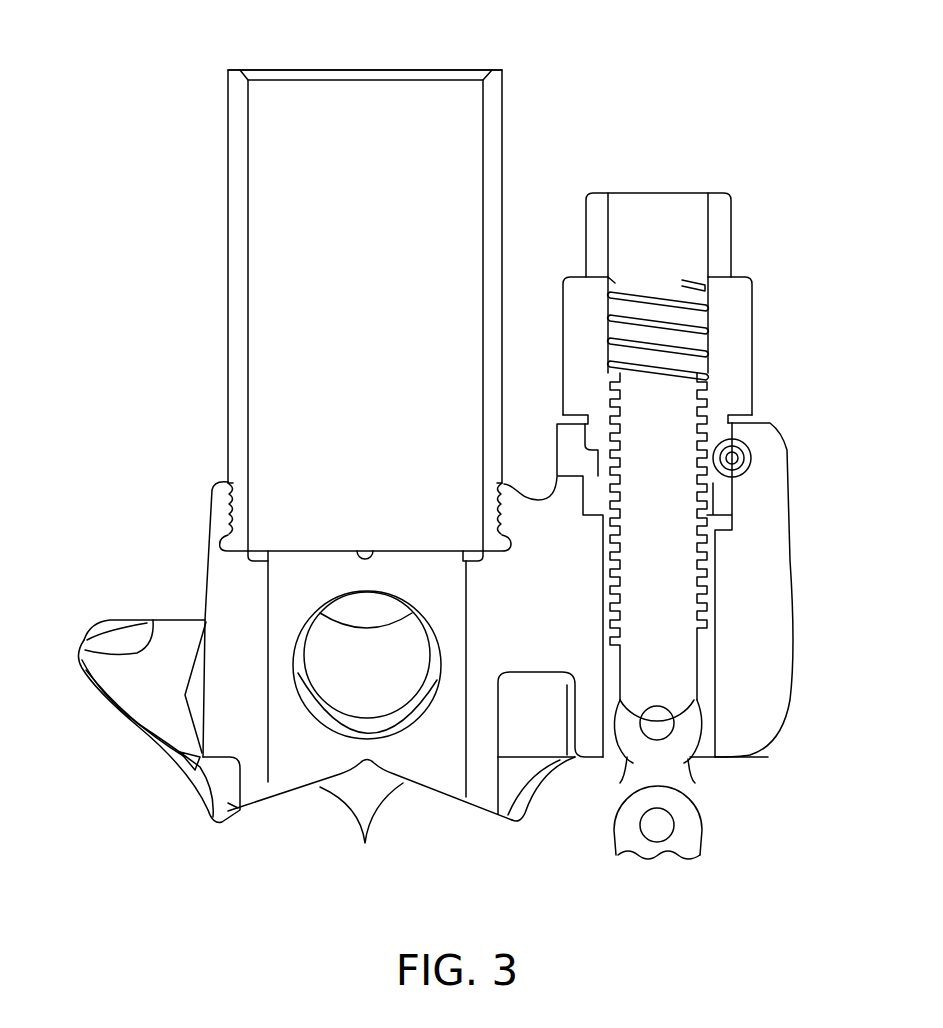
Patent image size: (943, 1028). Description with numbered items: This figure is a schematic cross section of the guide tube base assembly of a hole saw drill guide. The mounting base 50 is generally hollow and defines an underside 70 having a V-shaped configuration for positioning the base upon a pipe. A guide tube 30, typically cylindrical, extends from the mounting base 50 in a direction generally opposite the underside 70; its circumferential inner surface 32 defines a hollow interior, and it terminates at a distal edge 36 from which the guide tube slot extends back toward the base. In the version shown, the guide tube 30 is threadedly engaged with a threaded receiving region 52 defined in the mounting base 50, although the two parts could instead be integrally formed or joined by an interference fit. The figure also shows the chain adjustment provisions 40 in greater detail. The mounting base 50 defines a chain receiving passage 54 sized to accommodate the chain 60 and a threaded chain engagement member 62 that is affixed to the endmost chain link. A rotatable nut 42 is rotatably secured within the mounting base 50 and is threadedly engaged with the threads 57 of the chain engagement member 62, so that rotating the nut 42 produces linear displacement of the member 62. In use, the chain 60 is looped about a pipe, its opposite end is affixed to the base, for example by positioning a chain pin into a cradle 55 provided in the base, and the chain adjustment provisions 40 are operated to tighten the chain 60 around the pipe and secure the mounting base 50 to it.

The guide tube 30 is at (502, 157).
The circumferential inner surface 32 is at (250, 118).
The distal edge 36 is at (412, 70).
The chain adjustment provisions 40 is at (737, 325).
The rotatable nut 42 is at (726, 226).
The mounting base 50 is at (165, 638).
The threaded receiving region 52 is at (233, 492).
The chain receiving passage 54 is at (707, 731).
The cradle 55 is at (115, 638).
The threads 57 is at (653, 370).
The chain 60 is at (690, 823).
The threaded chain engagement member 62 is at (667, 638).
The underside 70 is at (498, 645).